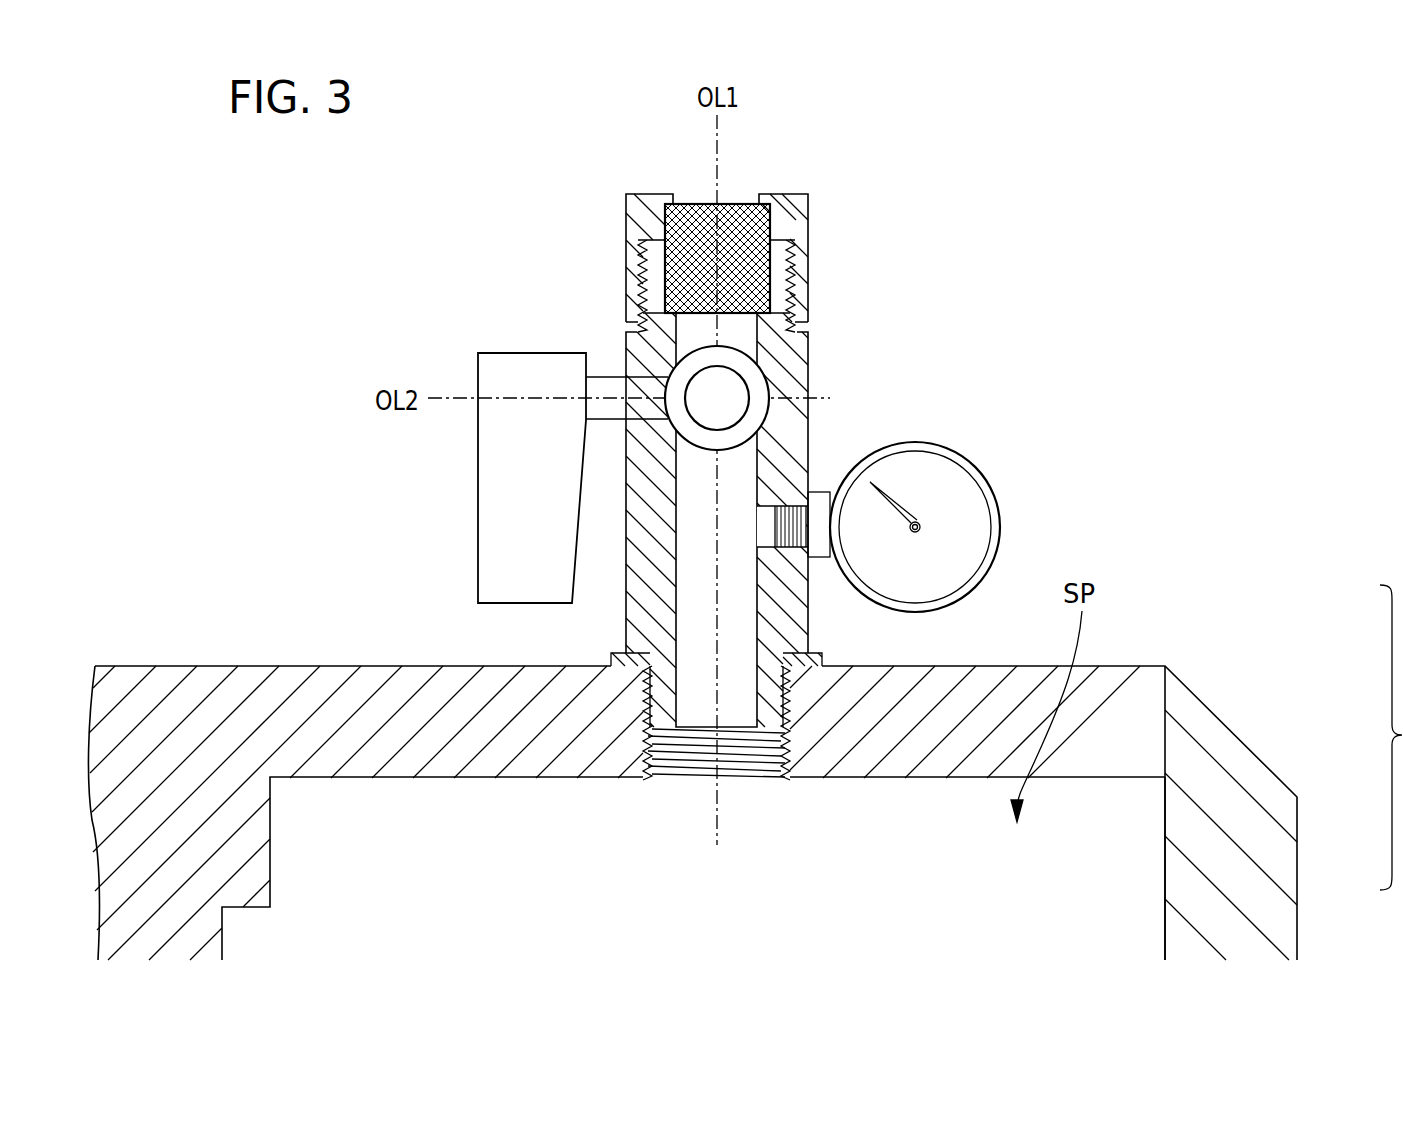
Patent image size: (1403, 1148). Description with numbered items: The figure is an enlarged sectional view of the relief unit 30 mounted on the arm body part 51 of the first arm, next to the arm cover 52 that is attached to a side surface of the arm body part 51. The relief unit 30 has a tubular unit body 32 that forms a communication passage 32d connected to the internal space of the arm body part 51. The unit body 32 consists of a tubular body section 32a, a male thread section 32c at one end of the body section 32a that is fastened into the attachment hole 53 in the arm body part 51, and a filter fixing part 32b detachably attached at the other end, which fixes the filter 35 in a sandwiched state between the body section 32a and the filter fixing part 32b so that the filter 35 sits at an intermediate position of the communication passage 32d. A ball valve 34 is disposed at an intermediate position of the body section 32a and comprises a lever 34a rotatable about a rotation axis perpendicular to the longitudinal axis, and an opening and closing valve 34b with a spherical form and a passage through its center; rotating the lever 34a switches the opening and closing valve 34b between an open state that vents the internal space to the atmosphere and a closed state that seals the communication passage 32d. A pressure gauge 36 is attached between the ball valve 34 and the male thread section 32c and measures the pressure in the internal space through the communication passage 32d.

The relief unit 30 is at (833, 142).
The unit body 32 is at (905, 190).
The body section 32a is at (808, 348).
The filter fixing part 32b is at (808, 215).
The male thread section 32c is at (790, 690).
The communication passage 32d is at (727, 332).
The ball valve 34 is at (613, 272).
The lever 34a is at (495, 353).
The opening and closing valve 34b is at (686, 352).
The filter 35 is at (741, 205).
The pressure gauge 36 is at (1000, 527).
The arm body part 51 is at (1124, 666).
The arm cover 52 is at (1297, 858).
The attachment hole 53 is at (656, 762).